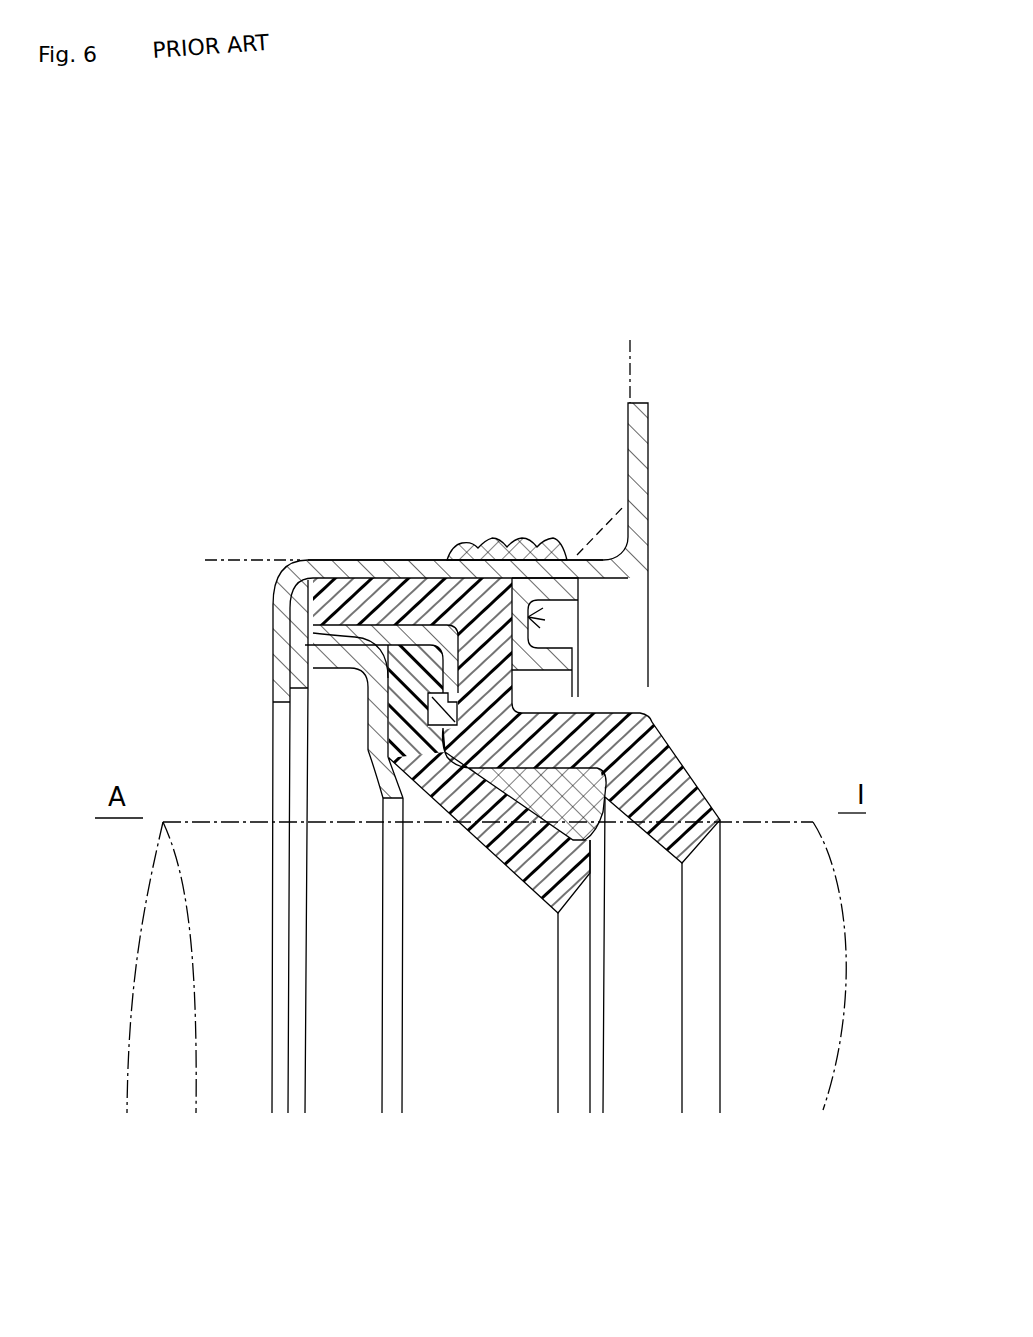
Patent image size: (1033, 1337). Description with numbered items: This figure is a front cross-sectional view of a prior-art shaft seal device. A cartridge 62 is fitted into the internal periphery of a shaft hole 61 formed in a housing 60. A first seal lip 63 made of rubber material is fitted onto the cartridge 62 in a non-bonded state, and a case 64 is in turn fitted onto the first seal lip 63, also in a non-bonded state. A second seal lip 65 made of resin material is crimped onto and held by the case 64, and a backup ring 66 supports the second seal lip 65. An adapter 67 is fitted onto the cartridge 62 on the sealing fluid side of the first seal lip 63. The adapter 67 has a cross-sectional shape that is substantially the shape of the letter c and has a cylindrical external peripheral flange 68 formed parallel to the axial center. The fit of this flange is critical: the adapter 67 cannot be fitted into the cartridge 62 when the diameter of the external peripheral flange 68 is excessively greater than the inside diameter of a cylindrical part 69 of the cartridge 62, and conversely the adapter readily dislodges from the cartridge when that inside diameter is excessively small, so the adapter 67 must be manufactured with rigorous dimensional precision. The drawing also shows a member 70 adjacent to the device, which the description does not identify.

The housing 60 is at (627, 357).
The shaft hole 61 is at (212, 560).
The cartridge 62 is at (640, 442).
The first seal lip 63 is at (627, 730).
The case 64 is at (308, 647).
The second seal lip 65 is at (458, 808).
The backup ring 66 is at (377, 743).
The adapter 67 is at (528, 617).
The external peripheral flange 68 is at (578, 590).
The cylindrical part 69 is at (397, 568).
The outer member 70 is at (158, 922).